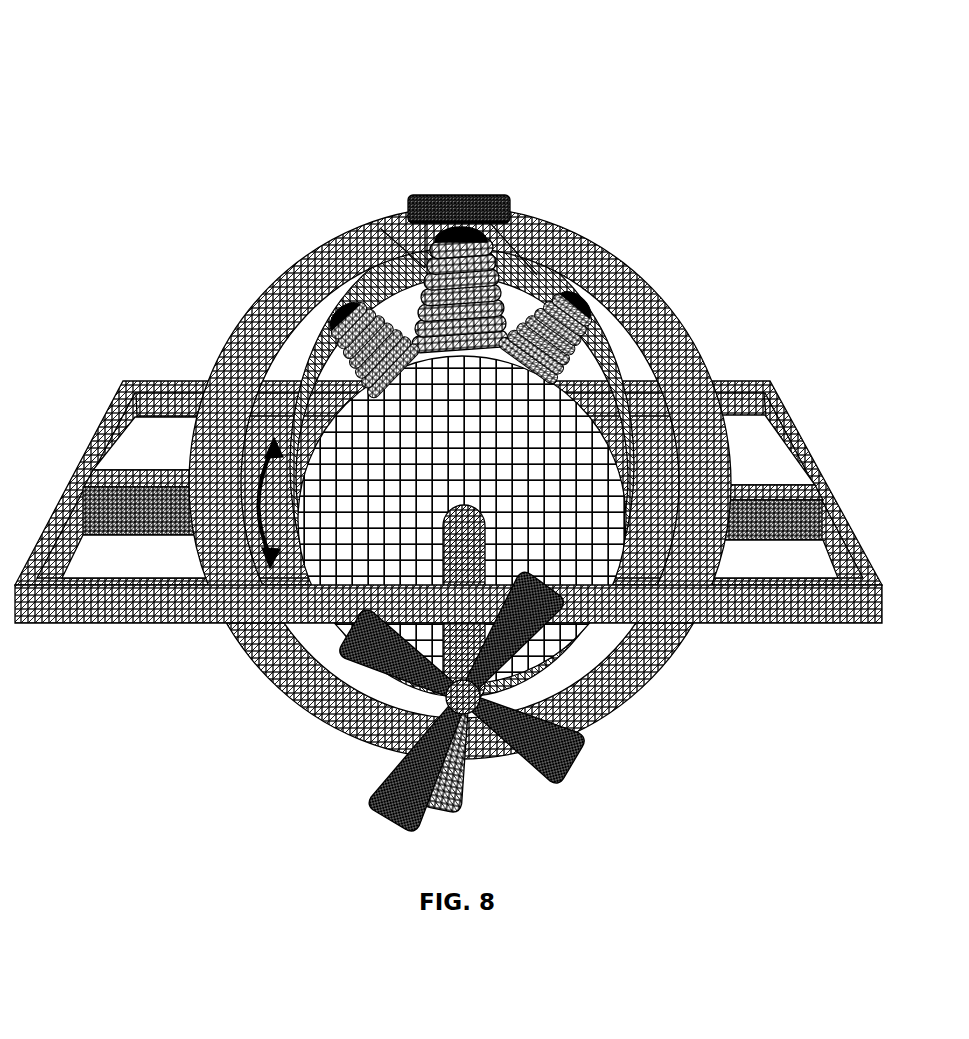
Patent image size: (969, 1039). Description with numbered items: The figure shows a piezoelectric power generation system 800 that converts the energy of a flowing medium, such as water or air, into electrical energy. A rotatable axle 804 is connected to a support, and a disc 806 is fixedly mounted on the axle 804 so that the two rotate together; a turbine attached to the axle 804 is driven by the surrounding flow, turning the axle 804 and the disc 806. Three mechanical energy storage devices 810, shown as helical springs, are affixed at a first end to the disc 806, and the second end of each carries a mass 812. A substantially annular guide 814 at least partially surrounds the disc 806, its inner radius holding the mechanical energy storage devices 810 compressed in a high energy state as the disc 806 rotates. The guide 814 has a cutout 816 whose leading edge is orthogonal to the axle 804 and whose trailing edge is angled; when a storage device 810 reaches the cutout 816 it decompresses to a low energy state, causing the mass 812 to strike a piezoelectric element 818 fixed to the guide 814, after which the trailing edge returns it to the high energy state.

The piezoelectric power generation system 800 is at (220, 44).
The axle 804 is at (385, 746).
The disc 806 is at (333, 460).
The mechanical energy storage device 810 is at (420, 265).
The mass 812 is at (505, 198).
The annular guide 814 is at (284, 694).
The cutout 816 is at (430, 182).
The piezoelectric element 818 is at (463, 190).